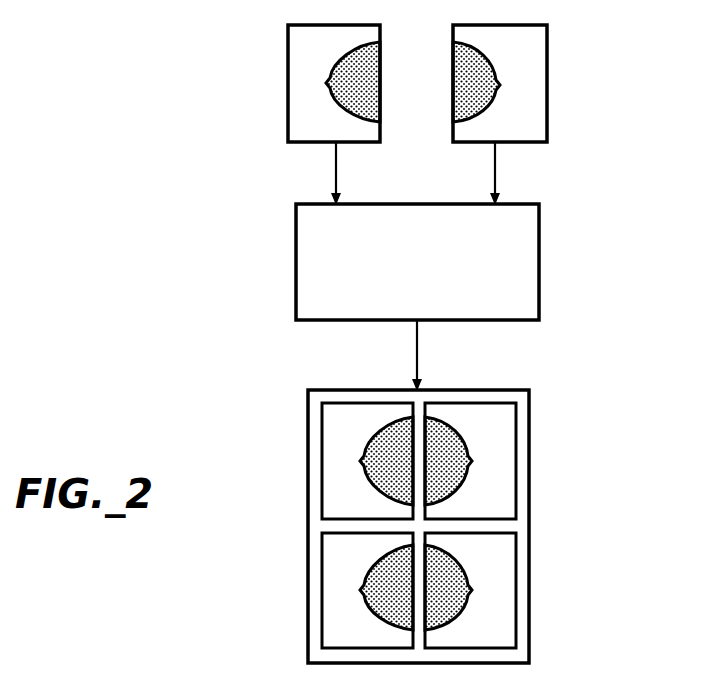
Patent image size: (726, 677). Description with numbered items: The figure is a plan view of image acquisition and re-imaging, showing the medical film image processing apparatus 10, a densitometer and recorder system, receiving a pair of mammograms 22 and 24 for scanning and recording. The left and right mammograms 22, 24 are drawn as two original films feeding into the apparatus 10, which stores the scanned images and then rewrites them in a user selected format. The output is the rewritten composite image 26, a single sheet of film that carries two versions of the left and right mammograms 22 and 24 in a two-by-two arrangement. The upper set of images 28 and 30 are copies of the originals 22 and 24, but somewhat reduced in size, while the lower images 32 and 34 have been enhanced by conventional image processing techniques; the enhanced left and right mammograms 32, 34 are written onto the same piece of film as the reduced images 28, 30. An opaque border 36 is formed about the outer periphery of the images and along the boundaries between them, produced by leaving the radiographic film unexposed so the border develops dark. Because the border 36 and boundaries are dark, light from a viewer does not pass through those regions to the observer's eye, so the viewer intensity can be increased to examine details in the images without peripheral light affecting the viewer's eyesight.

The medical film image processing apparatus 10 is at (297, 262).
The left mammogram 22 is at (289, 98).
The right mammogram 24 is at (546, 102).
The rewritten composite image 26 is at (378, 500).
The upper left reduced image 28 is at (335, 482).
The upper right reduced image 30 is at (492, 488).
The enhanced left mammogram 32 is at (335, 612).
The enhanced right mammogram 34 is at (500, 612).
The opaque border 36 is at (317, 528).